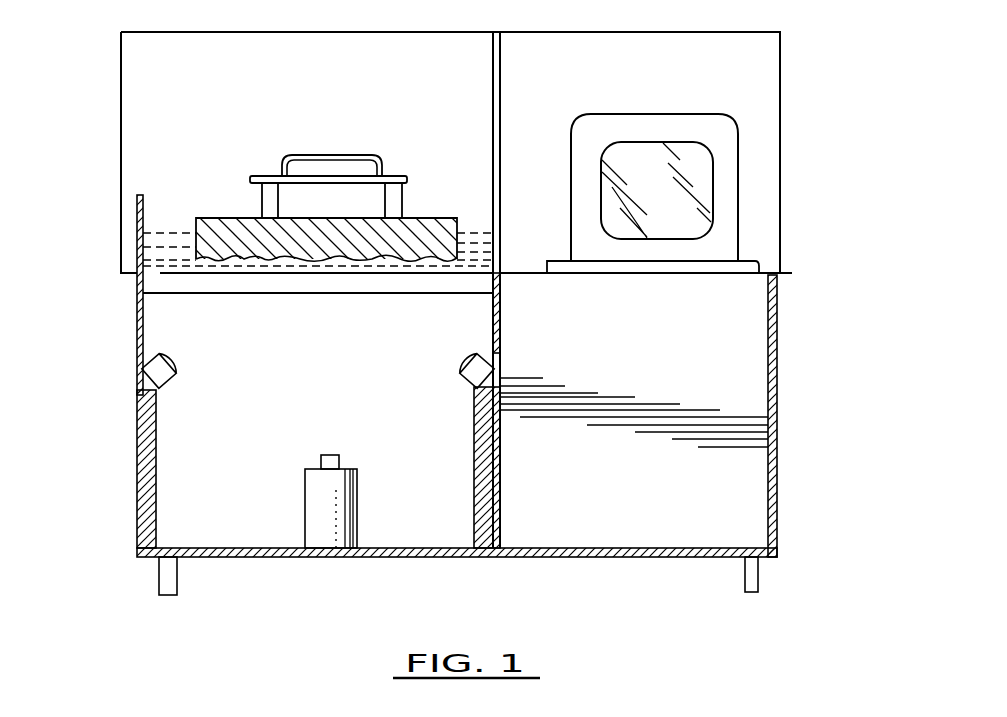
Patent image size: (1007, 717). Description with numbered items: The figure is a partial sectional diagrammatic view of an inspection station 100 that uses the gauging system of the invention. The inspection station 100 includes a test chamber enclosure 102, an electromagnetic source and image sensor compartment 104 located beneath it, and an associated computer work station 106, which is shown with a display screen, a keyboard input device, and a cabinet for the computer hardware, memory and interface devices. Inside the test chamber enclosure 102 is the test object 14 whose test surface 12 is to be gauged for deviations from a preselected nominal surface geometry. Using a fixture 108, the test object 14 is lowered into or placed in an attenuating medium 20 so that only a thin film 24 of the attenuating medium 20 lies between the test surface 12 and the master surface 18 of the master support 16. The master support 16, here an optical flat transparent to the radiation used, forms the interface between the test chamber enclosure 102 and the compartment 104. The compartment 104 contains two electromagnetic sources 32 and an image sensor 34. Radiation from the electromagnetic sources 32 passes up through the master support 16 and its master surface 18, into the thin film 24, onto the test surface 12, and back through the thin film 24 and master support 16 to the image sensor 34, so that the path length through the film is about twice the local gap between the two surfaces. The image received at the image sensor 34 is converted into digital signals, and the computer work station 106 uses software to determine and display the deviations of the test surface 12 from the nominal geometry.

The inspection station 100 is at (548, 22).
The test chamber enclosure 102 is at (121, 88).
The electromagnetic source and image sensor compartment 104 is at (137, 415).
The computer work station 106 is at (743, 243).
The fixture 108 is at (391, 177).
The test surface 12 is at (462, 263).
The test object 14 is at (218, 217).
The master support 16 is at (337, 287).
The master surface 18 is at (477, 273).
The attenuating medium 20 is at (150, 231).
The thin film 24 is at (262, 263).
The electromagnetic source 32 is at (176, 378).
The image sensor 34 is at (356, 497).